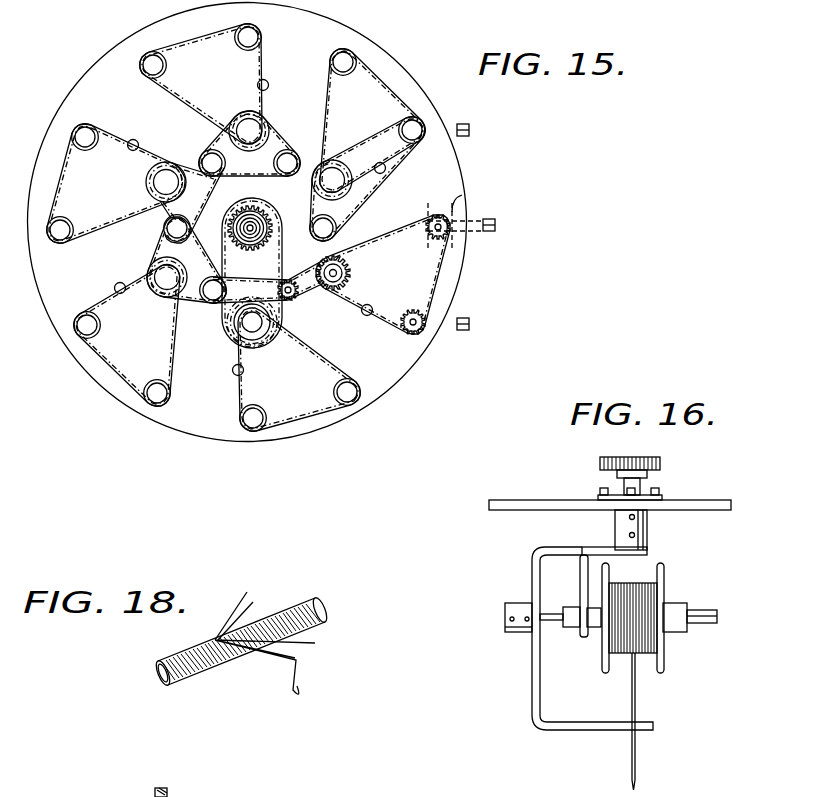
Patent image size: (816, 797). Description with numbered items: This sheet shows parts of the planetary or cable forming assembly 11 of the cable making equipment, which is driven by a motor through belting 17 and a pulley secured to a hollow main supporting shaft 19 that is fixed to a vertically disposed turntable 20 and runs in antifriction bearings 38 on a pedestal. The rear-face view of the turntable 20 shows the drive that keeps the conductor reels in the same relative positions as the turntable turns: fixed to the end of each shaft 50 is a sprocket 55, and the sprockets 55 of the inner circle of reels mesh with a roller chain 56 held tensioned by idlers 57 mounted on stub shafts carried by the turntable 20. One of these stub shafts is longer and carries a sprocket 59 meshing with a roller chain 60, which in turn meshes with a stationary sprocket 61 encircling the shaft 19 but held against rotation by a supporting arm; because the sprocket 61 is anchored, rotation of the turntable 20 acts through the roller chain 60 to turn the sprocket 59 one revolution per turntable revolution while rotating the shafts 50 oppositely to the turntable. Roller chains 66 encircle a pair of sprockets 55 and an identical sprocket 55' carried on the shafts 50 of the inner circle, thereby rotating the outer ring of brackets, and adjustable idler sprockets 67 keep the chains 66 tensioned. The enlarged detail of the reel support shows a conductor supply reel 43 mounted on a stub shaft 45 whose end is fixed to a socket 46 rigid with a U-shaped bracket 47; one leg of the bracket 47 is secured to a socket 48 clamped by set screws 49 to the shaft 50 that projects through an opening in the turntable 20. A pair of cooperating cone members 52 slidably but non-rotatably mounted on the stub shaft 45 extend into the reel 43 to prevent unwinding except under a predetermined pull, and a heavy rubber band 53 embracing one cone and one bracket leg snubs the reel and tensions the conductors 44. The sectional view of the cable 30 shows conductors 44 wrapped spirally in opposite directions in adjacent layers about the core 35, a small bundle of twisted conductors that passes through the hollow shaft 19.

In FIG. 15, the planetary or cable forming assembly 11 is at (96, 411).
In FIG. 15, the belting 17 is at (277, 183).
In FIG. 15, the main supporting shaft 19 is at (247, 222).
In FIG. 15, the turntable 20 is at (314, 441).
In FIG. 16, the turntable 20 is at (510, 500).
In FIG. 18, the turntable 20 is at (167, 792).
In FIG. 18, the cable 30 is at (175, 688).
In FIG. 18, the core 35 is at (320, 603).
In FIG. 15, the antifriction bearings 38 is at (240, 232).
In FIG. 15, the supply reel 43 is at (461, 196).
In FIG. 16, the supply reel 43 is at (664, 578).
In FIG. 16, the conductors 44 is at (637, 701).
In FIG. 18, the conductors 44 is at (265, 656).
In FIG. 16, the stub shaft 45 is at (557, 627).
In FIG. 15, the socket 46 is at (470, 130).
In FIG. 16, the socket 46 is at (507, 617).
In FIG. 16, the U-shaped bracket 47 is at (532, 704).
In FIG. 16, the socket 48 is at (650, 528).
In FIG. 16, the set screws 49 is at (629, 535).
In FIG. 15, the shaft 50 is at (450, 226).
In FIG. 16, the shaft 50 is at (647, 477).
In FIG. 16, the cone members 52 is at (597, 640).
In FIG. 16, the heavy rubber band 53 is at (587, 590).
In FIG. 15, the sprocket 55 is at (397, 260).
In FIG. 16, the sprocket 55 is at (656, 455).
In FIG. 15, the sprocket 55' is at (359, 271).
In FIG. 15, the roller chain 56 is at (348, 192).
In FIG. 15, the idlers 57 is at (283, 152).
In FIG. 15, the sprocket 59 is at (236, 330).
In FIG. 15, the roller chain 60 is at (222, 262).
In FIG. 15, the stationary sprocket 61 is at (252, 250).
In FIG. 15, the roller chains 66 is at (352, 378).
In FIG. 15, the adjustable idler sprockets 67 is at (366, 316).